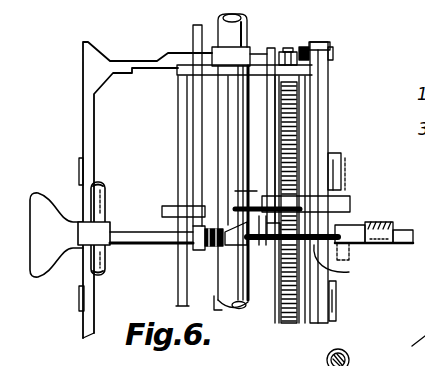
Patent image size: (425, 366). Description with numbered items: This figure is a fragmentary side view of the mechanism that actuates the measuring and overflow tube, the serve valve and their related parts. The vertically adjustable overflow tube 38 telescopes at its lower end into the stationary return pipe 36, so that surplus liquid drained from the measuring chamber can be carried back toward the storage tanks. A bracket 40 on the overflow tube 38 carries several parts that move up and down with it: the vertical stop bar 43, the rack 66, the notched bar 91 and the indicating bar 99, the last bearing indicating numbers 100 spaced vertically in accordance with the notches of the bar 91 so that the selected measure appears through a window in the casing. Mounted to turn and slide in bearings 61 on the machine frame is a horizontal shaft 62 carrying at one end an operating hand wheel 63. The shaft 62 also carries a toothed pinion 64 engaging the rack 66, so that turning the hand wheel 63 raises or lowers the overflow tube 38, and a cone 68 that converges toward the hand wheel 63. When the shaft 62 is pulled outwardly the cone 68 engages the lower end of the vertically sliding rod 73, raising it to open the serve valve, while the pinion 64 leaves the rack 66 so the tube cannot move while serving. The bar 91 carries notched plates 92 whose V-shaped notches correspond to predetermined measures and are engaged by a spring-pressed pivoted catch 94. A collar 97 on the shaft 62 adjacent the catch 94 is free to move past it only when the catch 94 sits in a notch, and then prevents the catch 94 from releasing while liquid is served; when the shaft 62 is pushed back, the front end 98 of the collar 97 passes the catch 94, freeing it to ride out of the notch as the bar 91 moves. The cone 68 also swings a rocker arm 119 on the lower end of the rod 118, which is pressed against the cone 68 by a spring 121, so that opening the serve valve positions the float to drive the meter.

The indicating bar 99 is at (83, 103).
The indicating numbers 100 is at (79, 163).
The operating hand wheel 63 is at (46, 206).
The bearings 61 is at (100, 232).
The horizontal shaft 62 is at (108, 248).
The spring 121 is at (207, 238).
The rocker arm 119 is at (203, 250).
The vertical stop bar 43 is at (182, 107).
The vertically sliding rod 73 is at (197, 121).
The overflow tube 38 is at (230, 142).
The cone 68 is at (222, 224).
The bracket 40 is at (252, 57).
The rod 118 is at (275, 47).
The bar 91 is at (326, 82).
The rack 66 is at (295, 122).
The notched plates 92 is at (340, 153).
The front end of collar 98 is at (350, 216).
The collar 97 is at (352, 222).
The pivoted catch 94 is at (342, 265).
The toothed pinion 64 is at (256, 246).
The stationary return pipe 36 is at (247, 306).